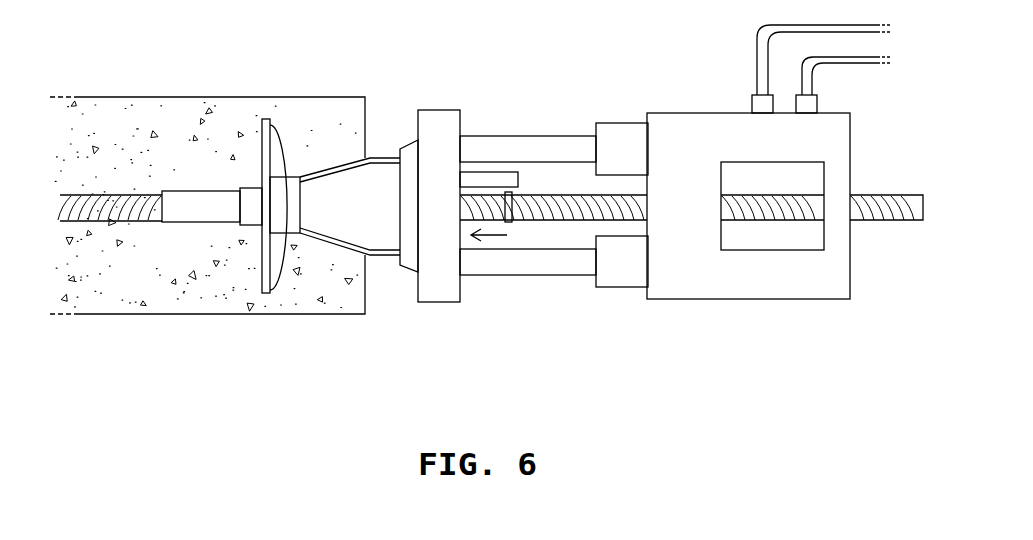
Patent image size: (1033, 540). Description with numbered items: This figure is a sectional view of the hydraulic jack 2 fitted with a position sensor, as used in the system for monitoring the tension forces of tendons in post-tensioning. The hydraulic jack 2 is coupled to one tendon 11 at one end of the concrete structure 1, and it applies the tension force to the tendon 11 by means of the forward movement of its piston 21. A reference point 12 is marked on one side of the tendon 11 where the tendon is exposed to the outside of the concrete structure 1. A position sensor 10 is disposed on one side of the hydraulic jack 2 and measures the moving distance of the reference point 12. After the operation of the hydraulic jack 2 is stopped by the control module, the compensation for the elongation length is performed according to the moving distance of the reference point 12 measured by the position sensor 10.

The concrete structure 1 is at (215, 97).
The hydraulic jack 2 is at (716, 316).
The position sensor 10 is at (497, 172).
The tendon 11 is at (858, 222).
The reference point 12 is at (511, 222).
The piston 21 is at (528, 275).